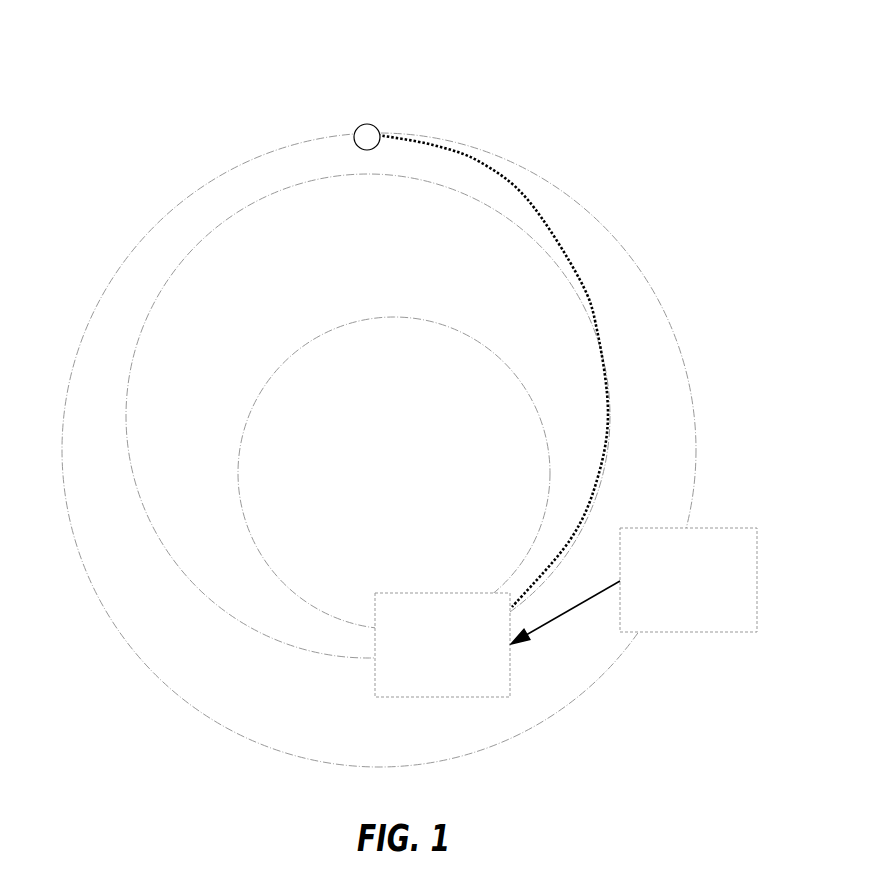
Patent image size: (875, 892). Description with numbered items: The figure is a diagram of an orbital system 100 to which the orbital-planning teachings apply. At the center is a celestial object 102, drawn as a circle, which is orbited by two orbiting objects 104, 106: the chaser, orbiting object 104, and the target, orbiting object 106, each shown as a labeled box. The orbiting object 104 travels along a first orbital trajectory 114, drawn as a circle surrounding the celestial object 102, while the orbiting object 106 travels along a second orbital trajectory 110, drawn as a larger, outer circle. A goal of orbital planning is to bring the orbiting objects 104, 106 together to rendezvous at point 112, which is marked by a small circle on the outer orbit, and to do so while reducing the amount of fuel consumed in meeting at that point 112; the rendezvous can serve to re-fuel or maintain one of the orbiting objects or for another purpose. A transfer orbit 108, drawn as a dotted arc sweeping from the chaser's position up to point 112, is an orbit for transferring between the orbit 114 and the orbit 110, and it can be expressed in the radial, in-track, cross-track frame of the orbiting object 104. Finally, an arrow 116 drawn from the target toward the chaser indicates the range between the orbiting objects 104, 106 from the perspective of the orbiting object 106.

The orbital system 100 is at (144, 76).
The celestial object 102 is at (410, 330).
The orbiting object 104 is at (428, 601).
The orbiting object 106 is at (750, 540).
The transfer orbit 108 is at (528, 200).
The second orbital trajectory 110 is at (627, 262).
The rendezvous point 112 is at (368, 123).
The first orbital trajectory 114 is at (165, 292).
The arrow 116 is at (588, 598).